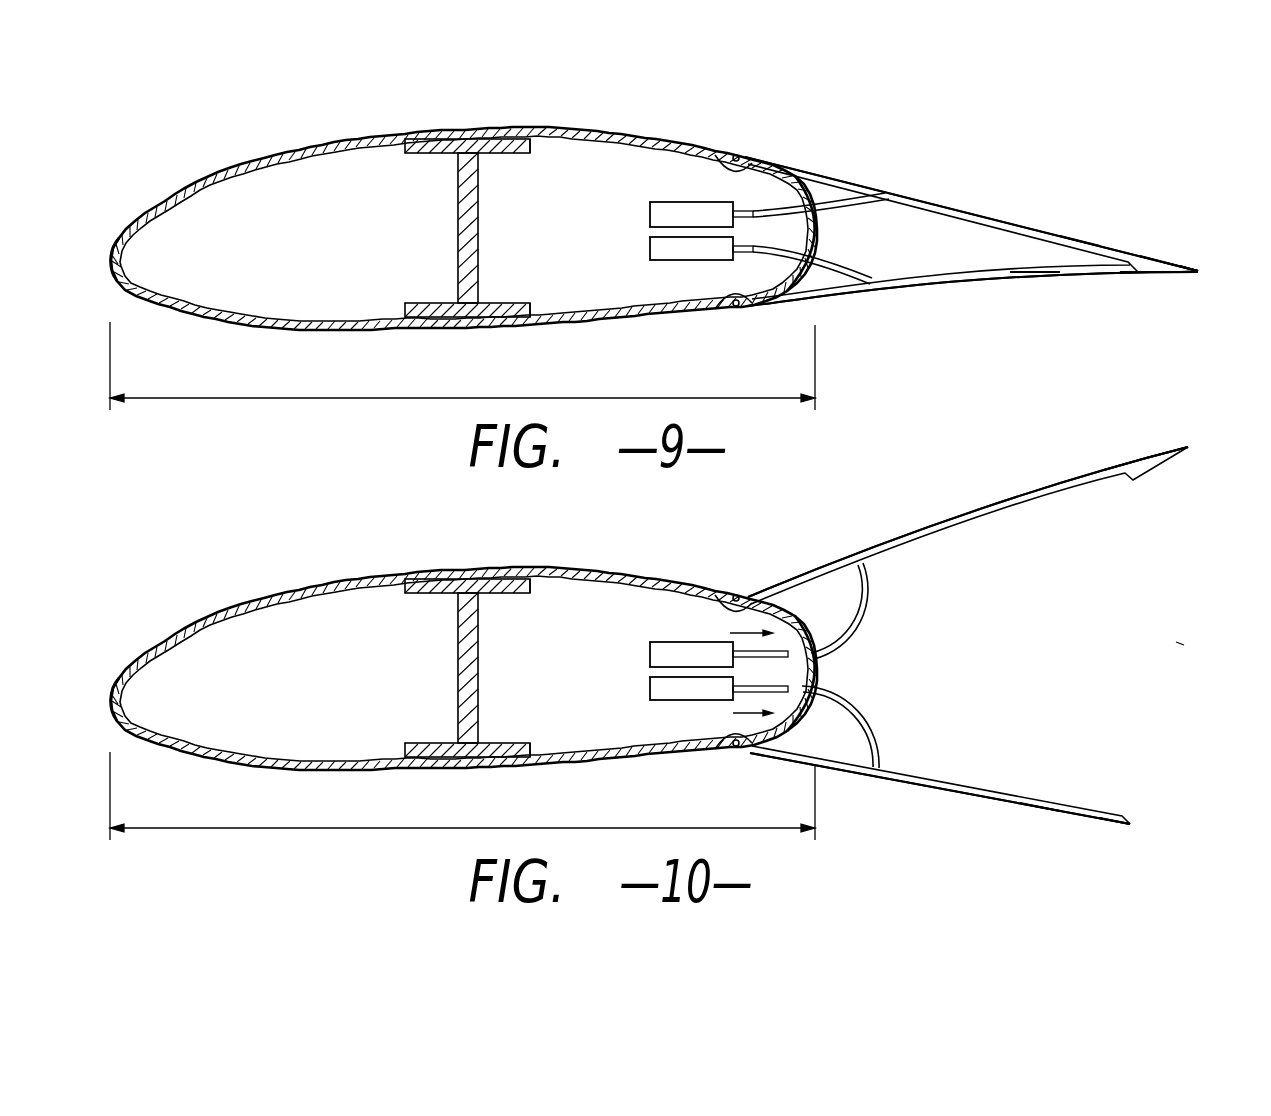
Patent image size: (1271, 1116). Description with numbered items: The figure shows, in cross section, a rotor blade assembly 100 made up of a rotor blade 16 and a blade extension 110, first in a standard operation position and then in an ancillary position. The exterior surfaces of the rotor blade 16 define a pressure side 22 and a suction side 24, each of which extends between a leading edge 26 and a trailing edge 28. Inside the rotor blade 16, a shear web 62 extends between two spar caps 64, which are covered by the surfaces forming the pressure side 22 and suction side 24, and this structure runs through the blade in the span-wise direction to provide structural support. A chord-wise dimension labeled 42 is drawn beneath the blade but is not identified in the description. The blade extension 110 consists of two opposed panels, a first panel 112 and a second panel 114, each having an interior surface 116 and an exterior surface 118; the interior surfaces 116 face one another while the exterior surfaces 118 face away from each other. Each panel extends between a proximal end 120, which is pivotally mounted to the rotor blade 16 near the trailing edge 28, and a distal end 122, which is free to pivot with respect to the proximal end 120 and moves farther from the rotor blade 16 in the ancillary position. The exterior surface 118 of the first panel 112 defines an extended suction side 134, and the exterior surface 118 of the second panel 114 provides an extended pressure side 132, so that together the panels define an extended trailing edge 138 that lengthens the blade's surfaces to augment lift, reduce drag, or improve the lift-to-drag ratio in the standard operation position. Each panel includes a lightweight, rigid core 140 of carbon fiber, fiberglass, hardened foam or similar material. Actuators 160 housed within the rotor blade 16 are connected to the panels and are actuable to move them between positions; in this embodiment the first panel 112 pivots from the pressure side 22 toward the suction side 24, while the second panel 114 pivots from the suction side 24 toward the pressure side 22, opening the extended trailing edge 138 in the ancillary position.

In FIG. 9, the rotor blade assembly 100 is at (426, 200).
In FIG. 10, the rotor blade assembly 100 is at (426, 640).
In FIG. 9, the rotor blade 16 is at (288, 152).
In FIG. 10, the rotor blade 16 is at (288, 592).
In FIG. 9, the leading edge 26 is at (113, 245).
In FIG. 10, the leading edge 26 is at (113, 685).
In FIG. 9, the trailing edge 28 is at (818, 236).
In FIG. 10, the trailing edge 28 is at (818, 678).
In FIG. 9, the suction side 24 is at (470, 139).
In FIG. 10, the suction side 24 is at (470, 579).
In FIG. 9, the pressure side 22 is at (472, 333).
In FIG. 10, the pressure side 22 is at (472, 773).
In FIG. 9, the shear web 62 is at (462, 242).
In FIG. 10, the shear web 62 is at (462, 682).
In FIG. 9, the spar caps 64 is at (487, 150).
In FIG. 10, the spar caps 64 is at (487, 590).
In FIG. 9, the actuators 160 is at (650, 250).
In FIG. 10, the actuators 160 is at (650, 690).
In FIG. 9, the proximal end 120 is at (766, 138).
In FIG. 10, the proximal end 120 is at (742, 580).
In FIG. 9, the chord length 42 is at (222, 399).
In FIG. 10, the chord length 42 is at (222, 829).
In FIG. 9, the blade extension 110 is at (1006, 226).
In FIG. 10, the blade extension 110 is at (1008, 640).
In FIG. 9, the first panel 112 is at (987, 183).
In FIG. 10, the first panel 112 is at (970, 492).
In FIG. 9, the second panel 114 is at (930, 310).
In FIG. 10, the second panel 114 is at (923, 800).
In FIG. 9, the interior surface 116 is at (982, 260).
In FIG. 10, the interior surface 116 is at (1023, 508).
In FIG. 9, the exterior surface 118 is at (883, 178).
In FIG. 10, the exterior surface 118 is at (926, 520).
In FIG. 9, the extended pressure side 132 is at (978, 290).
In FIG. 10, the extended pressure side 132 is at (987, 807).
In FIG. 9, the extended suction side 134 is at (1051, 189).
In FIG. 10, the extended suction side 134 is at (1036, 483).
In FIG. 9, the core 140 is at (1073, 232).
In FIG. 10, the core 140 is at (1096, 468).
In FIG. 9, the distal end 122 is at (1152, 234).
In FIG. 10, the distal end 122 is at (1137, 448).
In FIG. 9, the extended trailing edge 138 is at (1212, 277).
In FIG. 10, the extended trailing edge 138 is at (1182, 644).